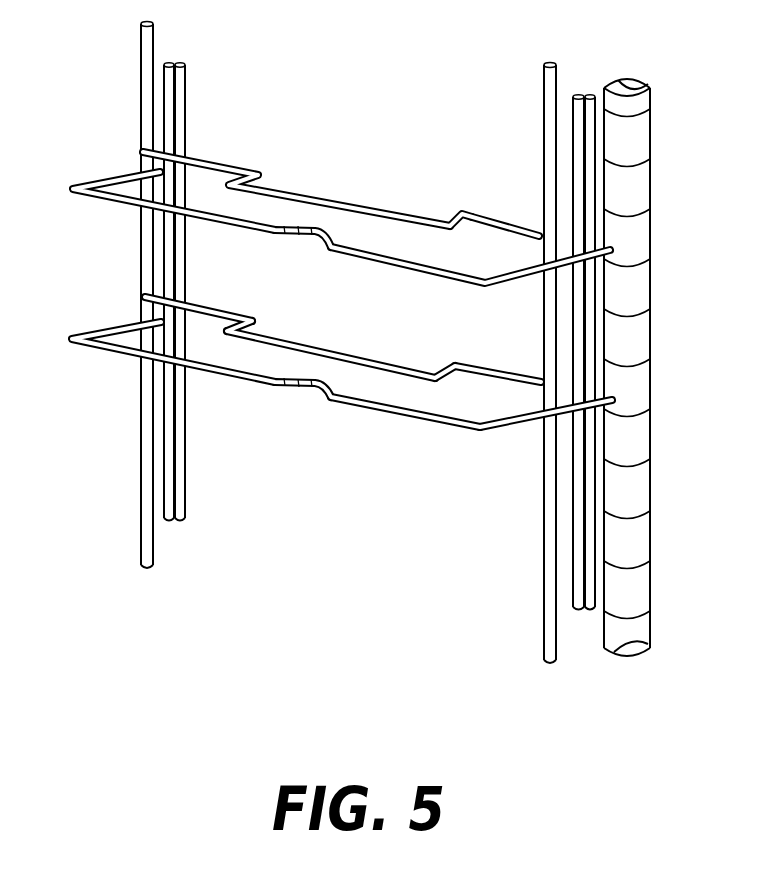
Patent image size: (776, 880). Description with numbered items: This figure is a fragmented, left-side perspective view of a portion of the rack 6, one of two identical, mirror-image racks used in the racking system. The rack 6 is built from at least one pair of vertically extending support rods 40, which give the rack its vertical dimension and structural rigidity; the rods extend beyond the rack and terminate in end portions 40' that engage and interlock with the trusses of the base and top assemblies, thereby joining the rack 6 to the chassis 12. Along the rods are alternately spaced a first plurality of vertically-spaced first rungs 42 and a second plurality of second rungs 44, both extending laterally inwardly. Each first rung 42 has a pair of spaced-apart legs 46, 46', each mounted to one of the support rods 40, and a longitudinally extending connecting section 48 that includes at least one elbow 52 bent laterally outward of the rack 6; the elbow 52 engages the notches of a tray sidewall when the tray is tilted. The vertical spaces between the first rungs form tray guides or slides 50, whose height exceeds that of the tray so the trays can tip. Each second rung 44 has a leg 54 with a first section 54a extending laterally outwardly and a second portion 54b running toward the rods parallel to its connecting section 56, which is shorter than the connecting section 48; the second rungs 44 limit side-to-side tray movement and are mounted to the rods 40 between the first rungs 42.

The rack 6 is at (684, 168).
The chassis 12 is at (392, 352).
The vertically extending support rods 40 is at (379, 336).
The end portions 40' is at (357, 352).
The first rungs 42 is at (605, 273).
The second rungs 44 is at (480, 212).
The leg 46 is at (156, 250).
The leg 46' is at (546, 447).
The connecting section 48 is at (240, 380).
The slides 50 is at (384, 302).
The elbow 52 is at (318, 228).
The leg 54 is at (436, 262).
The first section 54a is at (248, 322).
The second portion 54b is at (238, 300).
The connecting section 56 is at (343, 352).